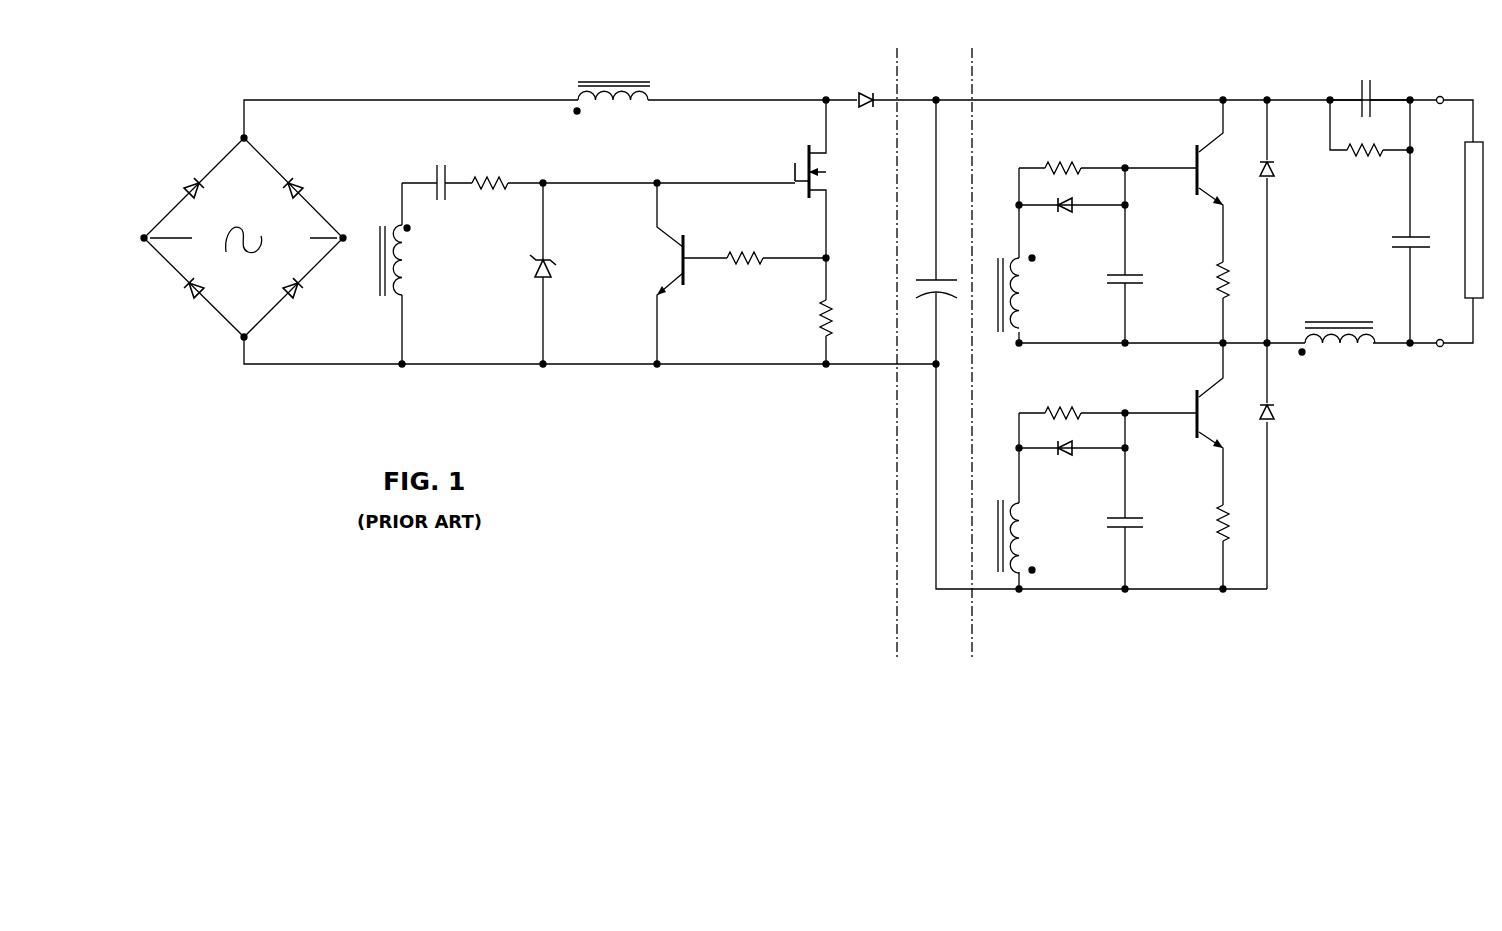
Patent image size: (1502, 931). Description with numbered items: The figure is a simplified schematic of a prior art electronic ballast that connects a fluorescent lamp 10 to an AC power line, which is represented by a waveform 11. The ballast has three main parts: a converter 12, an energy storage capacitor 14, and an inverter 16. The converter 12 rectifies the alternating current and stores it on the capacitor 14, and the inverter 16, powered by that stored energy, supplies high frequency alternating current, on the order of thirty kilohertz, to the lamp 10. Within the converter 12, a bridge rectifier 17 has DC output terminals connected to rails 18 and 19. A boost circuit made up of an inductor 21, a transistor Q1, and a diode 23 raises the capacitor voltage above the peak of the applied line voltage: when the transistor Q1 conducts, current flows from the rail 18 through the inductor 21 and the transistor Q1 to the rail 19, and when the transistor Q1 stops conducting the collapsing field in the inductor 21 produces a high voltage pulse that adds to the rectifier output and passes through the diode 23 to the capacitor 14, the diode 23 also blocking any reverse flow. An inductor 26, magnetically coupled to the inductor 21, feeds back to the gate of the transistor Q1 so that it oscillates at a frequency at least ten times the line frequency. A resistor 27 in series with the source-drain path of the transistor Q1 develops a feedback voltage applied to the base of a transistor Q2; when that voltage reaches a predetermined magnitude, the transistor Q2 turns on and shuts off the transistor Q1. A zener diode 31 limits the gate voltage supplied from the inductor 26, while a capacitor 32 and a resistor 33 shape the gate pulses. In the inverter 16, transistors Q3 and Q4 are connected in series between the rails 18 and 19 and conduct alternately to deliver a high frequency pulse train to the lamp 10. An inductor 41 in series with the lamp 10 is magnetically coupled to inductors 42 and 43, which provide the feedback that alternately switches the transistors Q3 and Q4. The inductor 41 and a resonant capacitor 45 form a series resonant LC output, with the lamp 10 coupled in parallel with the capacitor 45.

The fluorescent lamp 10 is at (1465, 212).
The waveform 11 is at (238, 257).
The converter 12 is at (730, 70).
The energy storage capacitor 14 is at (935, 59).
The inverter 16 is at (1114, 66).
The bridge rectifier 17 is at (288, 160).
The rail 18 is at (273, 103).
The rail 19 is at (273, 368).
The inductor 21 is at (603, 76).
The diode 23 is at (868, 85).
The inductor 26 is at (404, 267).
The resistor 27 is at (812, 313).
The zener diode 31 is at (550, 256).
The capacitor 32 is at (440, 163).
The resistor 33 is at (495, 173).
The inductor 41 is at (1334, 352).
The inductor 42 is at (1023, 283).
The inductor 43 is at (1027, 542).
The resonant capacitor 45 is at (1388, 238).
The transistor Q1 is at (823, 161).
The transistor Q2 is at (672, 258).
The transistor Q3 is at (1201, 164).
The transistor Q4 is at (1201, 409).